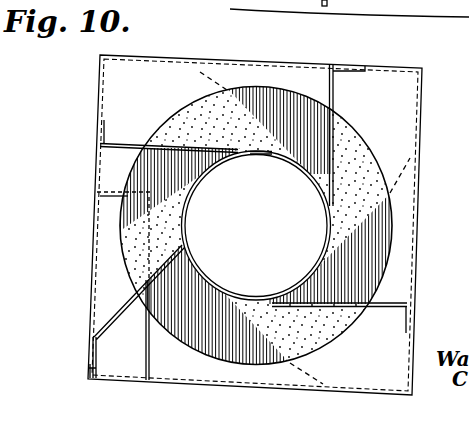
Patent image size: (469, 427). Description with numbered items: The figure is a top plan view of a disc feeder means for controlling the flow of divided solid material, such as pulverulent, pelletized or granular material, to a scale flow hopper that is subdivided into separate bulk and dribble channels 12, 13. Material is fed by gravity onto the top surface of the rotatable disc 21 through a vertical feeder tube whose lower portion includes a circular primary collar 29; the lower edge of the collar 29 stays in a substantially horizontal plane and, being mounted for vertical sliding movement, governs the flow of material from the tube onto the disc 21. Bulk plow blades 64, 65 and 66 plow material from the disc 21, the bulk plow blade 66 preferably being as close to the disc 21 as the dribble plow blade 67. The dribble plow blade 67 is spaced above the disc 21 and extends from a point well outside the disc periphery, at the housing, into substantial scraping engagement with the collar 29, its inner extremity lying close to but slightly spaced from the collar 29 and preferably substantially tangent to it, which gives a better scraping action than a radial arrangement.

The bulk channel 12 is at (405, 182).
The dribble channel 13 is at (89, 368).
The rotatable disc 21 is at (392, 237).
The primary collar 29 is at (268, 155).
The plow blade 64 is at (393, 305).
The plow blade 65 is at (334, 99).
The bulk plow blade 66 is at (128, 142).
The dribble plow blade 67 is at (117, 309).